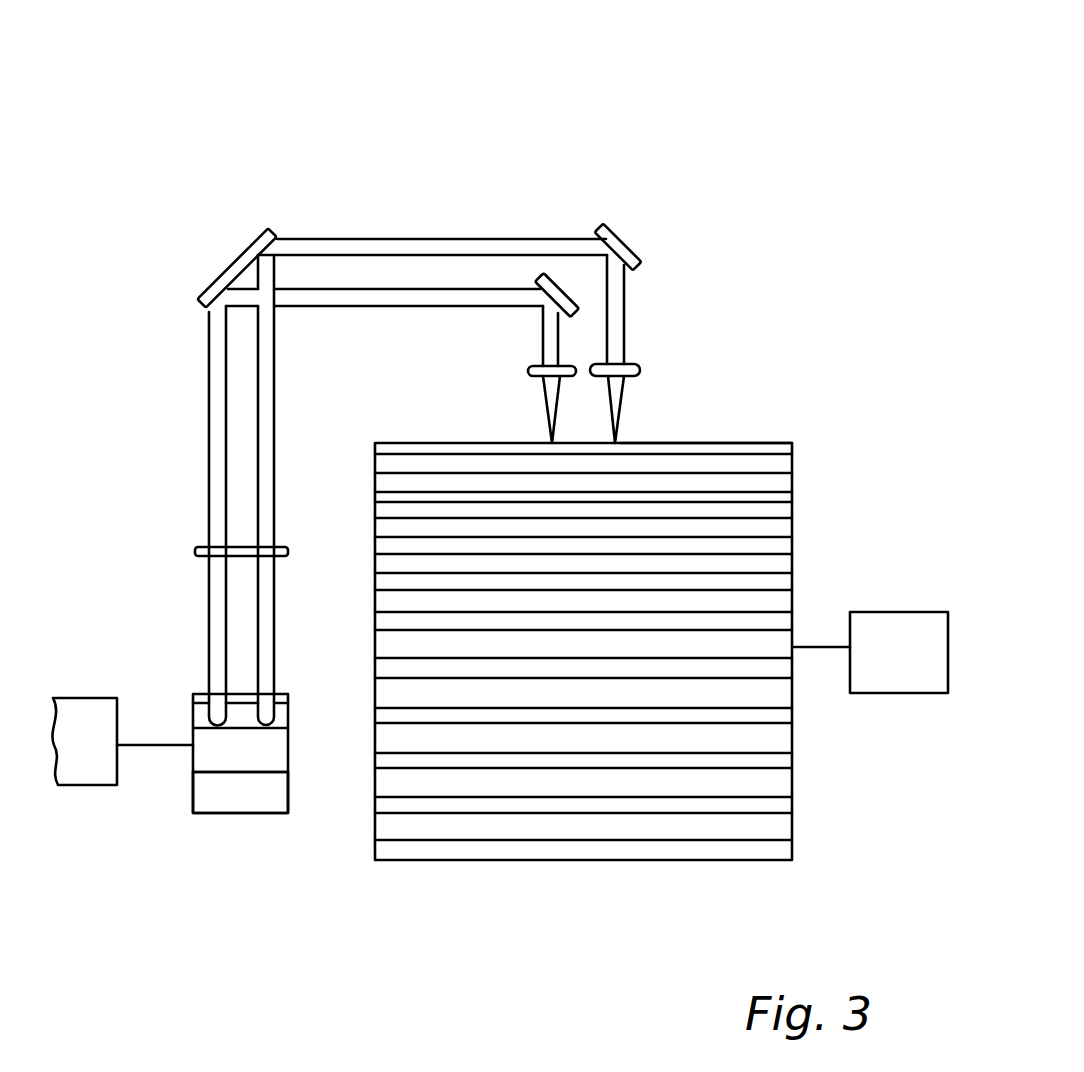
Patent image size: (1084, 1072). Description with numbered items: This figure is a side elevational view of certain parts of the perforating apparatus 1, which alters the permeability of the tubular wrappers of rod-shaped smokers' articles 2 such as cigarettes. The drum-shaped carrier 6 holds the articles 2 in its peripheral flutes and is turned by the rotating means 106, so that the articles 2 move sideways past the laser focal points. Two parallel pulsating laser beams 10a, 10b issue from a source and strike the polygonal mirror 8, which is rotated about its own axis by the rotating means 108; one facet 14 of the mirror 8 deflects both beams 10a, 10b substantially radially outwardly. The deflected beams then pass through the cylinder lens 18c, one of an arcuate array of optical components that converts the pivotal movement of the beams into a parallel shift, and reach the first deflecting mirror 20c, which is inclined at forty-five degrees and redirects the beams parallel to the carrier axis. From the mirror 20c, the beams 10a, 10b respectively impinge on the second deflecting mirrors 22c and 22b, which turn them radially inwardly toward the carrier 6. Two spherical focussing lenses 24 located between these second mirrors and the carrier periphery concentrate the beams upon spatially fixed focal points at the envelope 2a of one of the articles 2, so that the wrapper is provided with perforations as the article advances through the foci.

The apparatus 1 is at (605, 118).
The rod-shaped smokers' articles 2 is at (796, 441).
The envelope 2a is at (716, 441).
The drum-shaped carrier 6 is at (342, 848).
The polygonal mirror 8 is at (185, 785).
The laser beam 10a is at (550, 345).
The laser beam 10b is at (617, 330).
The facets 14 is at (215, 797).
The cylinder lens 18c is at (198, 550).
The first deflecting mirror 20c is at (242, 263).
The second deflecting mirror 22b is at (627, 250).
The second deflecting mirror 22c is at (567, 282).
The spherical focussing lenses 24 is at (570, 375).
The means for rotating the carrier 106 is at (873, 618).
The means for rotating the mirror 108 is at (70, 710).